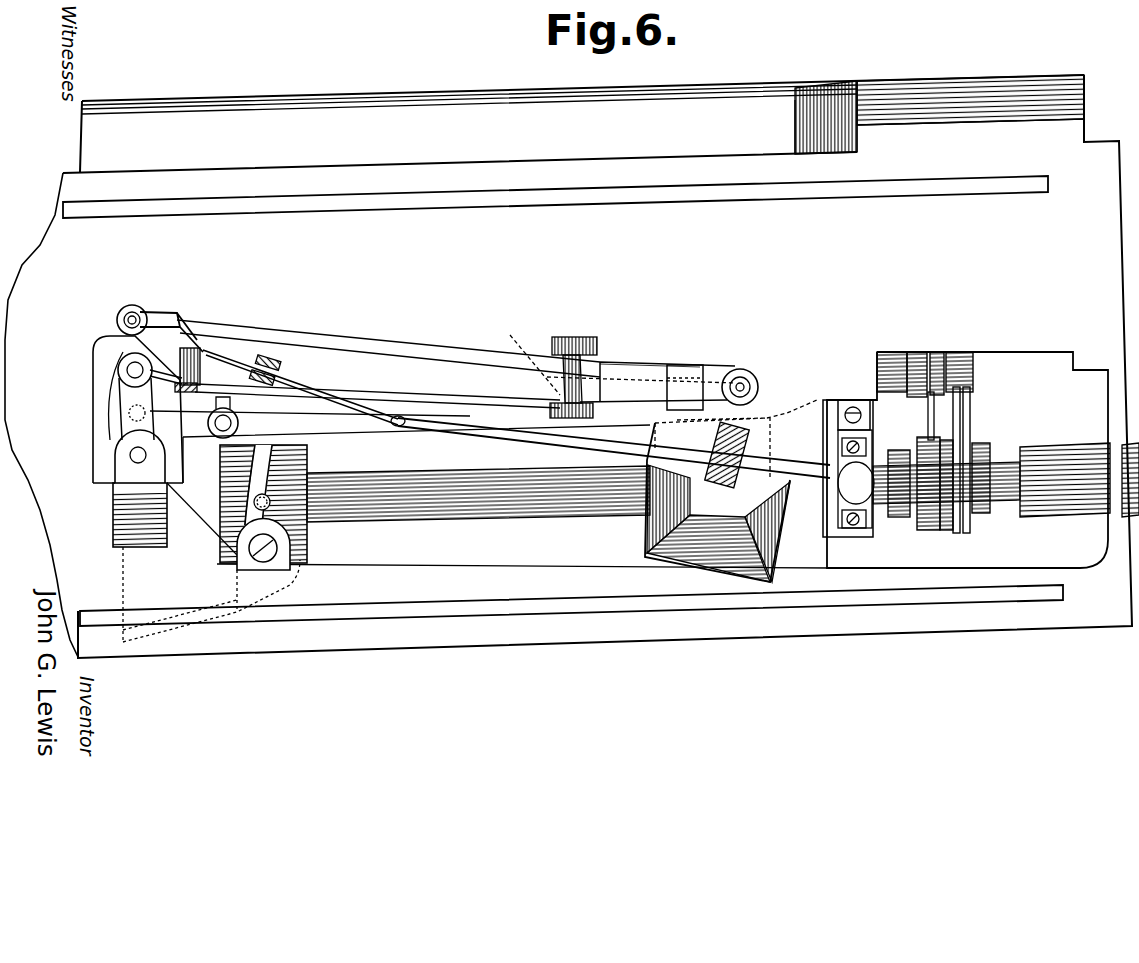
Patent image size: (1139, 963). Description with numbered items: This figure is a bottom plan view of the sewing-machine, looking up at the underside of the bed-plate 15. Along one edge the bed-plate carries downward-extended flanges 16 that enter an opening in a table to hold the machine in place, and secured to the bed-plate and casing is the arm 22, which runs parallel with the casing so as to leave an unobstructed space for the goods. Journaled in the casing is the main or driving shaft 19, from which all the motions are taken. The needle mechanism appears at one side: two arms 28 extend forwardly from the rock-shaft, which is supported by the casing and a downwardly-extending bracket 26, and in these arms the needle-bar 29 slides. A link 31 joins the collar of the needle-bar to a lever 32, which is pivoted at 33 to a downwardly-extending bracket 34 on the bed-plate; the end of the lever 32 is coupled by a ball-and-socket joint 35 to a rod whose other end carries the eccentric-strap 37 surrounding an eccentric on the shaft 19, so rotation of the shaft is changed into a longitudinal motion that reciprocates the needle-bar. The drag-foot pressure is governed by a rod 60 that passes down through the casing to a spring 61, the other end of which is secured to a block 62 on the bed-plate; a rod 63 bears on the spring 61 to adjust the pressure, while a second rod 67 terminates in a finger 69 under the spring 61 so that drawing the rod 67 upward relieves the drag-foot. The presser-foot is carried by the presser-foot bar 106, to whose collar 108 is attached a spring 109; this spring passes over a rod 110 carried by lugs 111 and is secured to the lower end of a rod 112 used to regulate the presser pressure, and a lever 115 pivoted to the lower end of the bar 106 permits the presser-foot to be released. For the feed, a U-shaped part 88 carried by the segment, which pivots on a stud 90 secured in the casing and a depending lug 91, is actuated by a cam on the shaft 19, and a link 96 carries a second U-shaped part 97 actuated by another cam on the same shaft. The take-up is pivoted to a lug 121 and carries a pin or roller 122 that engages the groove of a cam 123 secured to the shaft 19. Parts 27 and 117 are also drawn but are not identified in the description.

The arm 22 is at (583, 114).
The downward-extended flanges 16 is at (462, 208).
The presser-foot bar 106 is at (132, 308).
The collar 108 is at (168, 301).
The needle-bar 29 is at (130, 362).
The bracket 27 is at (107, 352).
The arms 28 is at (110, 395).
The rod 60 is at (120, 413).
The downwardly-extending bracket 26 is at (118, 508).
The link 31 is at (188, 392).
The finger 69 is at (222, 397).
The rod 67 is at (232, 423).
The spring 109 is at (375, 345).
The lever 115 is at (330, 380).
The spring 61 is at (380, 399).
The rod 63 is at (518, 354).
The lugs 111 is at (565, 398).
The rod 110 is at (598, 368).
The bed-plate 15 is at (641, 344).
The block 62 is at (690, 366).
The rod 112 is at (742, 370).
The pivot 33 is at (745, 430).
The eccentric-strap 37 is at (853, 405).
The stud 90 is at (893, 370).
The depending lug 91 is at (918, 372).
The link 96 is at (928, 417).
The U-shaped part 88 is at (967, 455).
The U-shaped part 97 is at (940, 520).
The ball-and-socket joint 35 is at (848, 482).
The downwardly-extending bracket 34 is at (665, 545).
The lever 32 is at (505, 432).
The pin 117 is at (394, 428).
The cam 123 is at (293, 455).
The pin or roller 122 is at (303, 517).
The main or driving shaft 19 is at (397, 502).
The lug 121 is at (250, 543).